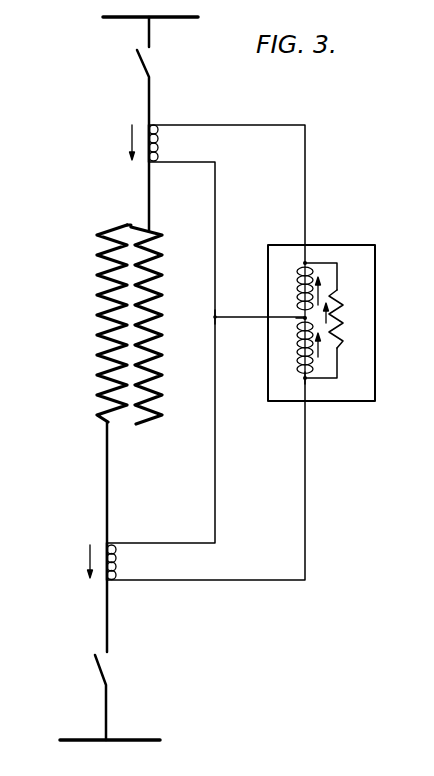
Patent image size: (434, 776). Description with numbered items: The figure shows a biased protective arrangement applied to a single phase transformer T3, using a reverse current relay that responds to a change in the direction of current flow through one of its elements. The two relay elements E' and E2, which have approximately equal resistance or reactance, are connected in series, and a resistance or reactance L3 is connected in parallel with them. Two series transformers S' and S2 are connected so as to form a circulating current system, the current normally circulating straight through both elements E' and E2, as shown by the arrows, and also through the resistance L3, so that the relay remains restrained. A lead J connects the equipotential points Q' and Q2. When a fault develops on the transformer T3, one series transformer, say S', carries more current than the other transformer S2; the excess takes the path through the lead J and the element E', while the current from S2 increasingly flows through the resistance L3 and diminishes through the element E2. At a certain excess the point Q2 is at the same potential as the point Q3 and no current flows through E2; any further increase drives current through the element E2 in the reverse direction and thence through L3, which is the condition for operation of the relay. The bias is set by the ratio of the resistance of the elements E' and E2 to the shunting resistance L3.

The series transformer S' is at (168, 143).
The series transformer S2 is at (120, 561).
The transformer T3 is at (112, 418).
The equipotential point Q' is at (199, 335).
The equipotential point Q2 is at (303, 318).
The point Q3 is at (304, 379).
The relay element E' is at (277, 276).
The relay element E2 is at (300, 348).
The resistance L3 is at (338, 290).
The lead J is at (255, 317).